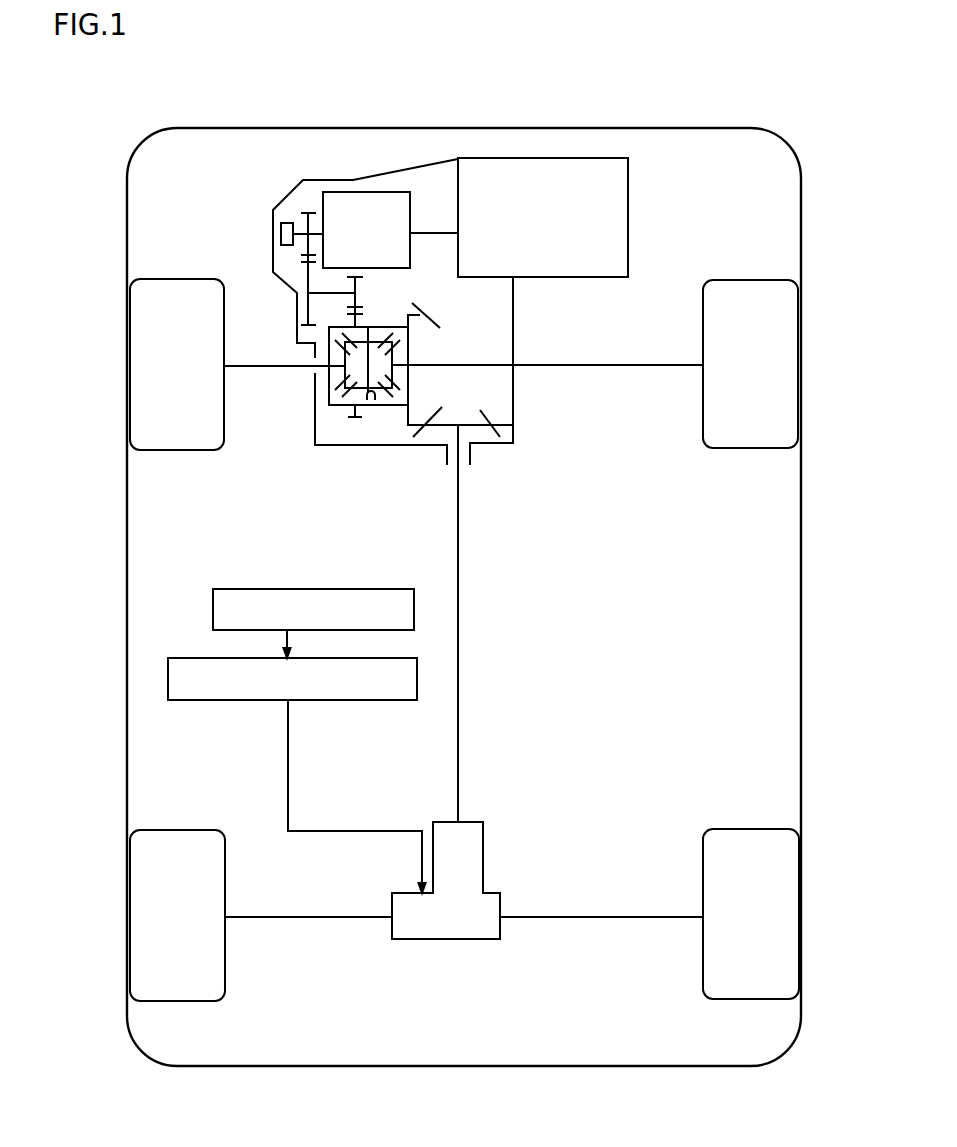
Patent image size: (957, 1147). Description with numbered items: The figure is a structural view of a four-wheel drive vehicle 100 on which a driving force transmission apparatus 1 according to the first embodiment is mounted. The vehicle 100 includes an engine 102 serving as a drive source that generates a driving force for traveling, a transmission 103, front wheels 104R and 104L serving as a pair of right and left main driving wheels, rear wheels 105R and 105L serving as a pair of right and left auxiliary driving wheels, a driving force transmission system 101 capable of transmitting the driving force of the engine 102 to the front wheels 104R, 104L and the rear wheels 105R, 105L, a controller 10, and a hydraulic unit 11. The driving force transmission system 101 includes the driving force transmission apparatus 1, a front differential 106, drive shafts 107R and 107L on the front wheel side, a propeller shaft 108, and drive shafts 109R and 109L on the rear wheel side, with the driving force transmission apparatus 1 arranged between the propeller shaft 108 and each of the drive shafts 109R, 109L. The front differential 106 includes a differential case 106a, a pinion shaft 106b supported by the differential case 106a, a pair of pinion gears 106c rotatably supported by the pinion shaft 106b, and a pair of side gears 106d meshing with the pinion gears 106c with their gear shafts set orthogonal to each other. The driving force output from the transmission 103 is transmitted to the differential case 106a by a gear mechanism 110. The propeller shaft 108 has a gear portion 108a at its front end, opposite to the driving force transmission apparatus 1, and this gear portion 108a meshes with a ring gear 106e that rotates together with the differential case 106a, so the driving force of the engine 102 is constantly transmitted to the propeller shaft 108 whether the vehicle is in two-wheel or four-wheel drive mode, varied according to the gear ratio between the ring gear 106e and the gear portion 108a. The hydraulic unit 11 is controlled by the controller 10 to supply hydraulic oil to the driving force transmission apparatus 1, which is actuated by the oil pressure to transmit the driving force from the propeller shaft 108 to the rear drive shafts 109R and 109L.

The four-wheel drive vehicle 100 is at (734, 85).
The driving force transmission system 101 is at (536, 340).
The engine 102 is at (575, 158).
The transmission 103 is at (360, 192).
The front wheel 104L is at (127, 340).
The front wheel 104R is at (800, 340).
The rear wheel 105L is at (127, 933).
The rear wheel 105R is at (802, 933).
The front differential 106 is at (316, 414).
The differential case 106a is at (338, 407).
The pinion shaft 106b is at (375, 400).
The pinion gears 106c is at (377, 345).
The side gears 106d is at (392, 358).
The ring gear 106e is at (427, 316).
The drive shaft 107L is at (252, 363).
The drive shaft 107R is at (613, 362).
The propeller shaft 108 is at (458, 650).
The gear portion 108a is at (503, 427).
The drive shaft 109L is at (335, 918).
The drive shaft 109R is at (640, 917).
The gear mechanism 110 is at (287, 266).
The controller 10 is at (238, 589).
The hydraulic unit 11 is at (183, 658).
The driving force transmission apparatus 1 is at (470, 822).